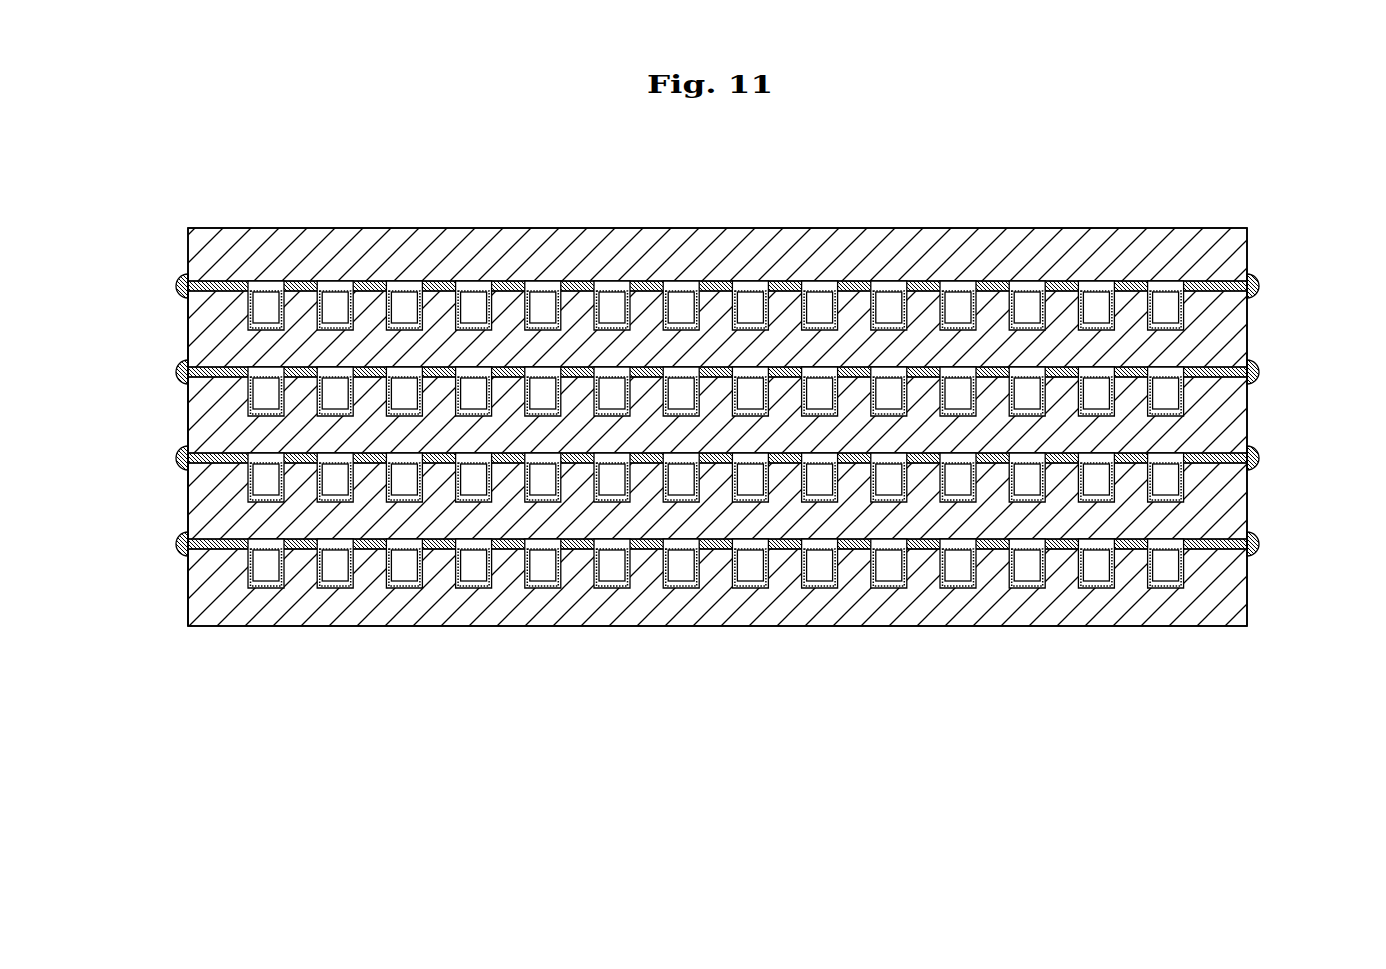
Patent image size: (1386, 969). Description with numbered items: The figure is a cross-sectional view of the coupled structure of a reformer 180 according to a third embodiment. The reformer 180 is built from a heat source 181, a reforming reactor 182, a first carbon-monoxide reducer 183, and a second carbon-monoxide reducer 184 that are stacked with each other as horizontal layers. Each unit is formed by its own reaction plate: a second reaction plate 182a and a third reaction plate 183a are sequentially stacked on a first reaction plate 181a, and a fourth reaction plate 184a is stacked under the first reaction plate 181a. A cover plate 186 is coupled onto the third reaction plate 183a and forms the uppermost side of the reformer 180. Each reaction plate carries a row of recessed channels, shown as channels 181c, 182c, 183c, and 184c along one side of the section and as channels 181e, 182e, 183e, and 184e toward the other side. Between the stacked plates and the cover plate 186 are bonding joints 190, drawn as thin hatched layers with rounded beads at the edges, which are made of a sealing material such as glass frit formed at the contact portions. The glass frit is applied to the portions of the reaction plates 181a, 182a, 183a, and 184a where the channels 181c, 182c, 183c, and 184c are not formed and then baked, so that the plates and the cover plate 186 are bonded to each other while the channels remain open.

The reformer 180 is at (1228, 175).
The cover plate 186 is at (1245, 243).
The bonding joints 190 is at (176, 288).
The first carbon-monoxide reducer 183 is at (715, 477).
The reforming reactor 182 is at (715, 520).
The heat source 181 is at (715, 563).
The second carbon-monoxide reducer 184 is at (715, 606).
The third reaction plate 183a is at (176, 332).
The second reaction plate 182a is at (176, 418).
The first reaction plate 181a is at (176, 504).
The fourth reaction plate 184a is at (176, 590).
The channel 183c is at (268, 300).
The channel 182c is at (336, 385).
The channel 181c is at (405, 475).
The channel 184c is at (480, 585).
The channel of third plate layer 183e is at (958, 300).
The channel of second plate layer 182e is at (1022, 385).
The channel of first plate layer 181e is at (1100, 490).
The channel of fourth plate layer 184e is at (1170, 573).